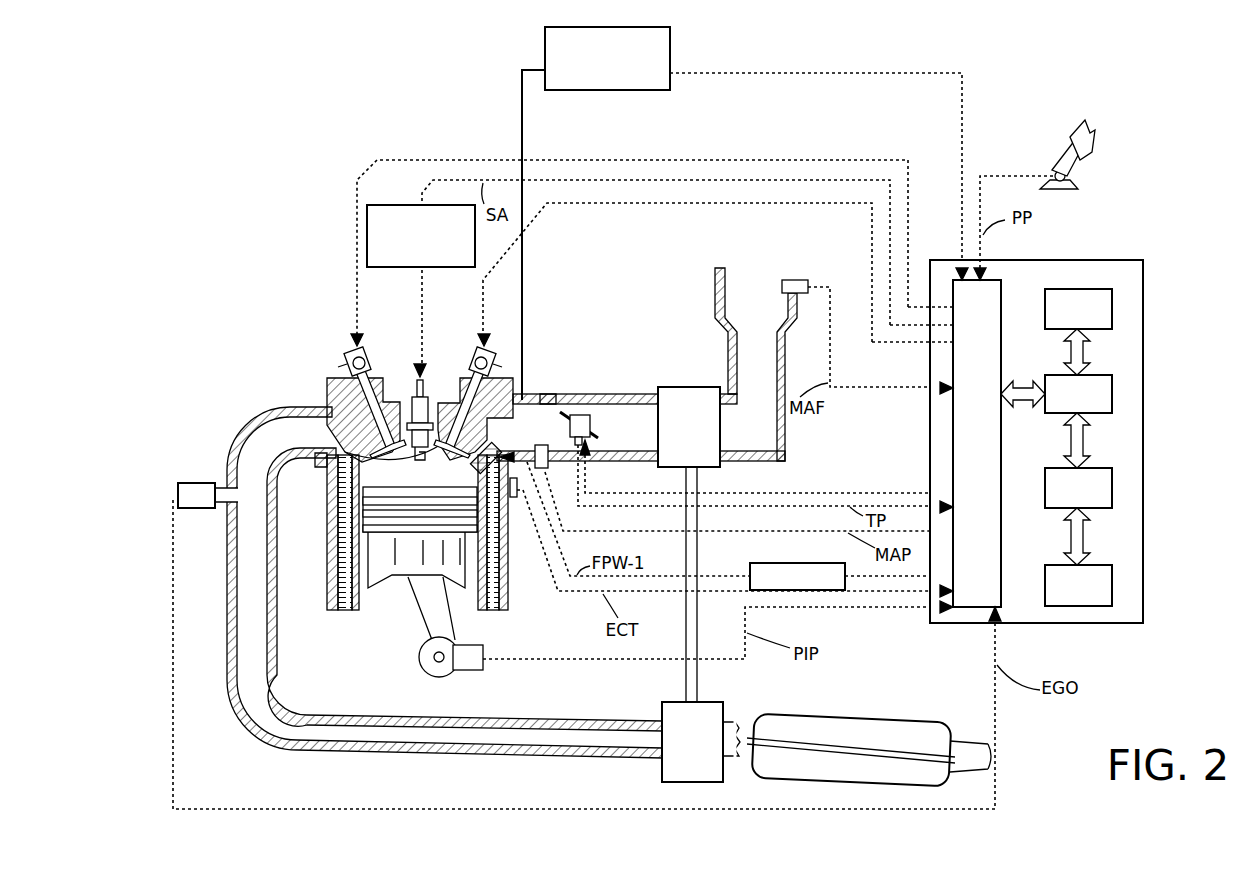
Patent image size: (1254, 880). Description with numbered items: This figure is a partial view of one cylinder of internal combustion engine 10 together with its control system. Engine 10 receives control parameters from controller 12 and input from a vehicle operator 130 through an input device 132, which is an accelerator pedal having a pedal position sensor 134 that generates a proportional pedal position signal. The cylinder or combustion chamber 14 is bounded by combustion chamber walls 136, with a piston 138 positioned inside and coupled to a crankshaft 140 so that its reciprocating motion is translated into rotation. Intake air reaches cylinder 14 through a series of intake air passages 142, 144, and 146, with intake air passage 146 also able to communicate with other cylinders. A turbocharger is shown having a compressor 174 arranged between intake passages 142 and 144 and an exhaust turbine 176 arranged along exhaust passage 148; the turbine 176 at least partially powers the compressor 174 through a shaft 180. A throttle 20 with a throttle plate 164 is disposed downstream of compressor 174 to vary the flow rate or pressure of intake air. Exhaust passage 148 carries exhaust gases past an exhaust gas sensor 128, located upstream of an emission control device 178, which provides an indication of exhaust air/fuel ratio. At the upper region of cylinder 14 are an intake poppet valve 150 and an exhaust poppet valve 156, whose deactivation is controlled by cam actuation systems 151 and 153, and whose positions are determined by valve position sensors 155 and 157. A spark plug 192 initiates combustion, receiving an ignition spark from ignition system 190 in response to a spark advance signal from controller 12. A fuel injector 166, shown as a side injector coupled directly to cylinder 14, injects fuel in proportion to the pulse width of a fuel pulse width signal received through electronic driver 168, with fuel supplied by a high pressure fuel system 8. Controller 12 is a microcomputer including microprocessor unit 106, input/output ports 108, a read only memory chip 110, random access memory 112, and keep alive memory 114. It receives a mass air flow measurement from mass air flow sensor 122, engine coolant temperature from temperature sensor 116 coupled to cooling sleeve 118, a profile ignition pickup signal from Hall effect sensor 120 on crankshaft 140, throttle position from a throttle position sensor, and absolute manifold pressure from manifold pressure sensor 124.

The internal combustion engine 10 is at (172, 100).
The high pressure fuel system 8 is at (672, 36).
The controller 12 is at (1075, 429).
The cylinder 14 is at (327, 490).
The throttle 20 is at (583, 413).
The microprocessor unit 106 is at (1113, 395).
The input/output ports 108 is at (1003, 290).
The read only memory chip 110 is at (1113, 305).
The random access memory 112 is at (1113, 490).
The keep alive memory 114 is at (1113, 588).
The temperature sensor 116 is at (515, 500).
The cooling sleeve 118 is at (505, 585).
The Hall effect sensor 120 is at (480, 672).
The mass air flow sensor 122 is at (803, 280).
The manifold pressure sensor 124 is at (549, 470).
The exhaust gas sensor 128 is at (178, 490).
The vehicle operator 130 is at (1078, 150).
The input device 132 is at (1050, 157).
The pedal position sensor 134 is at (1070, 178).
The combustion chamber walls 136 is at (357, 608).
The piston 138 is at (400, 578).
The crankshaft 140 is at (422, 672).
The intake air passage 142 is at (741, 310).
The intake air passage 144 is at (616, 435).
The intake air passage 146 is at (524, 435).
The exhaust passage 148 is at (312, 441).
The intake poppet valve 150 is at (434, 440).
The cam actuation system 151 is at (473, 356).
The cam actuation system 153 is at (366, 356).
The valve position sensor 155 is at (498, 357).
The exhaust poppet valve 156 is at (388, 445).
The valve position sensor 157 is at (345, 362).
The throttle plate 164 is at (547, 398).
The fuel injector 166 is at (610, 503).
The electronic driver 168 is at (752, 564).
The compressor 174 is at (672, 386).
The exhaust turbine 176 is at (660, 772).
The emission control device 178 is at (918, 718).
The shaft 180 is at (700, 680).
The ignition system 190 is at (384, 205).
The spark plug 192 is at (414, 395).